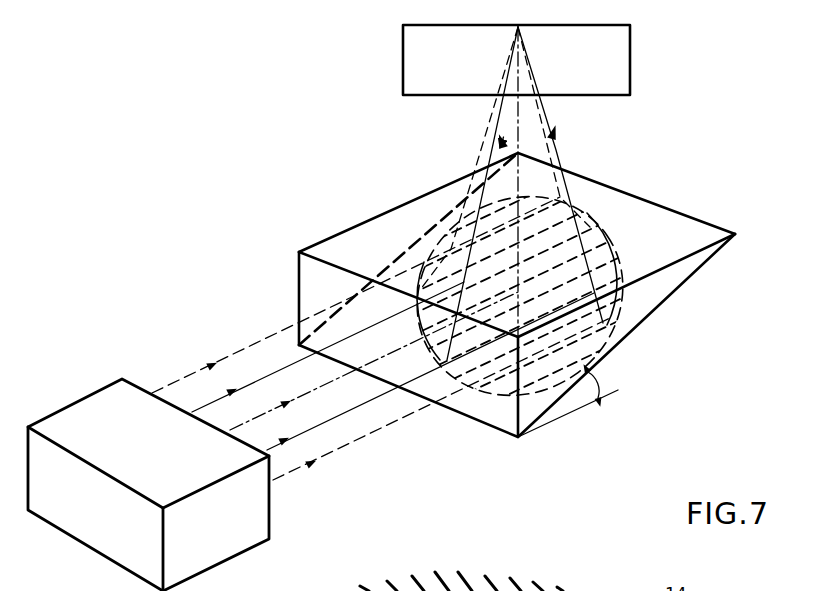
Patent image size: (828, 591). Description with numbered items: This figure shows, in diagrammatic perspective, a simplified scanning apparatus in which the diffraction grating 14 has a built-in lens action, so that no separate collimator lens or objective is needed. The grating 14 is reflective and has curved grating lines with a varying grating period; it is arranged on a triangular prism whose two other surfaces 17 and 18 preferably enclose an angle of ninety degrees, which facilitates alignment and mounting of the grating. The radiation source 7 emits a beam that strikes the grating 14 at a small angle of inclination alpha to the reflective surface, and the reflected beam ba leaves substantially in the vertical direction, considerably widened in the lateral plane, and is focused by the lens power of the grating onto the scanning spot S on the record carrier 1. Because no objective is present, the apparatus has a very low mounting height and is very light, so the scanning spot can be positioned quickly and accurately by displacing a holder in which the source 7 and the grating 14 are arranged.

The detector plate 1 is at (630, 62).
The wavelength-tunable radiation source 7 is at (100, 408).
The diffraction grating 14 is at (611, 241).
The surface of the prism 17 is at (493, 415).
The surface of the prism 18 is at (365, 242).
The scanning spot S is at (518, 28).
The reflected beam ba is at (328, 440).
The angle of inclination alpha is at (608, 374).